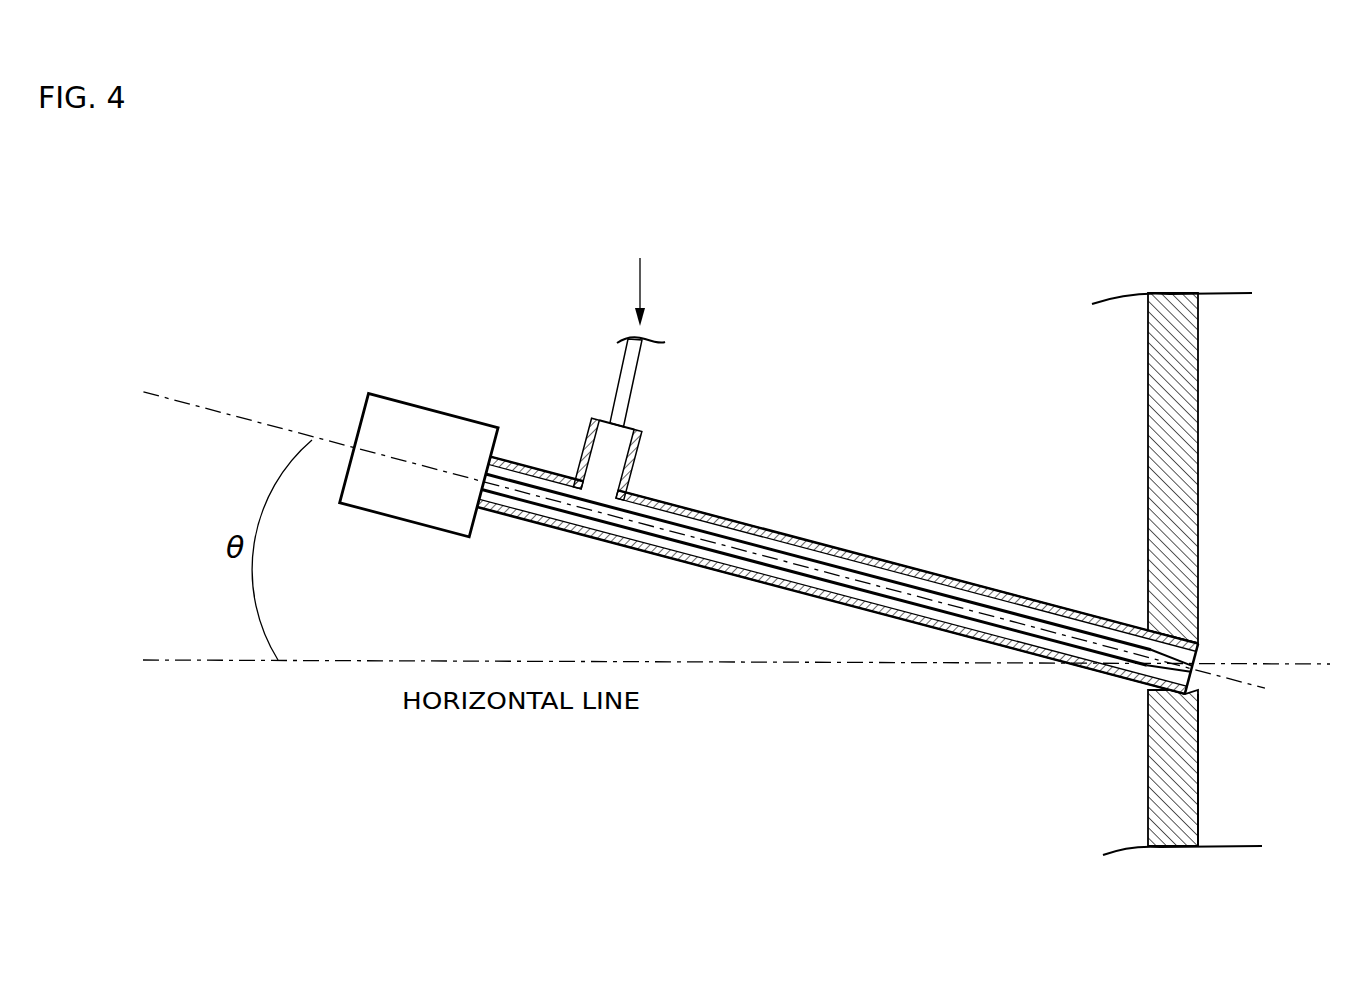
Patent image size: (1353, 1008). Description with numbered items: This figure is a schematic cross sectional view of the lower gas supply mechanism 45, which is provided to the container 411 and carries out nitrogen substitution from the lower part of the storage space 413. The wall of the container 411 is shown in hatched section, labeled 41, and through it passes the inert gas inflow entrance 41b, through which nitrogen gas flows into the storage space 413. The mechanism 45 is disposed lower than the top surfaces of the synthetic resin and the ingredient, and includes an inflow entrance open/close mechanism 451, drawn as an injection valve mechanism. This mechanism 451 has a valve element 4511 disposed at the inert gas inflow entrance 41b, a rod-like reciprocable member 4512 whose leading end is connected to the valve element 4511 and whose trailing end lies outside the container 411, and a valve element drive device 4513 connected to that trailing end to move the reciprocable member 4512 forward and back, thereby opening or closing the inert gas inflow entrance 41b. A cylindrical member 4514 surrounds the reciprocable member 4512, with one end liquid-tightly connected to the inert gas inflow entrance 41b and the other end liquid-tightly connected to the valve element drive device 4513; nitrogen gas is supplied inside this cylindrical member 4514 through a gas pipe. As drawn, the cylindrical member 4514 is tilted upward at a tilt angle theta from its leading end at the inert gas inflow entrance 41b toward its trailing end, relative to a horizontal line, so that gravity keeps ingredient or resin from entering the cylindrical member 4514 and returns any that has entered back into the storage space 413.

The lower gas supply mechanism 45 is at (358, 272).
The inflow entrance open/close mechanism 451 is at (404, 526).
The valve element 4511 is at (1198, 693).
The reciprocable member 4512 is at (723, 543).
The valve element drive device 4513 is at (435, 412).
The cylindrical member 4514 is at (855, 542).
The chamber wall 41 is at (1140, 456).
The container 411 is at (1200, 778).
The storage space 413 is at (1300, 461).
The inert gas inflow entrance 41b is at (1198, 640).